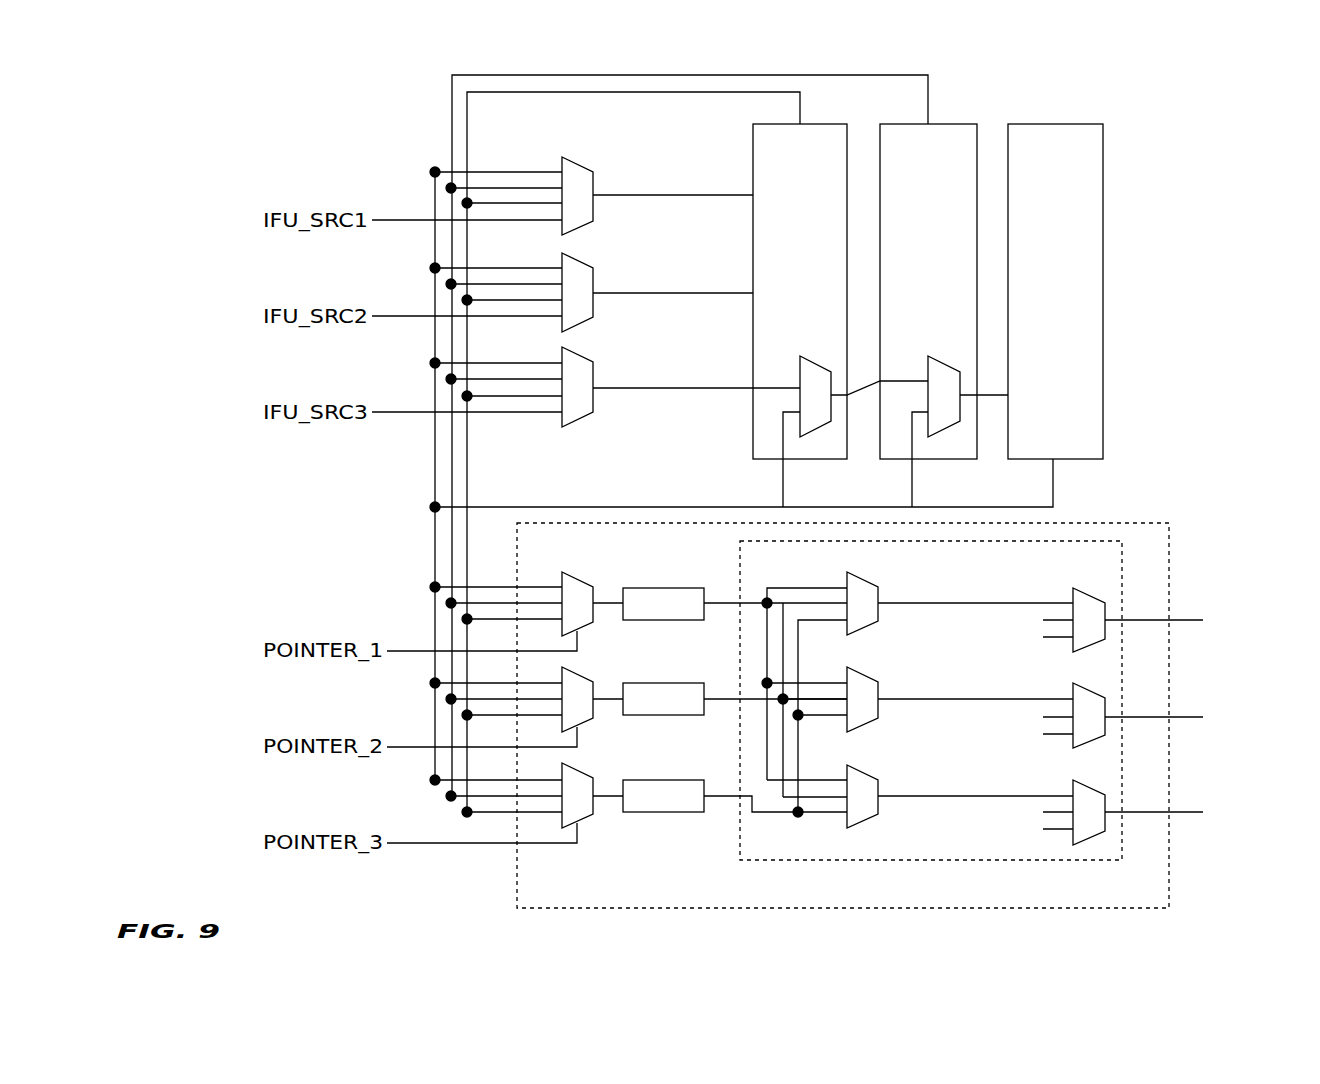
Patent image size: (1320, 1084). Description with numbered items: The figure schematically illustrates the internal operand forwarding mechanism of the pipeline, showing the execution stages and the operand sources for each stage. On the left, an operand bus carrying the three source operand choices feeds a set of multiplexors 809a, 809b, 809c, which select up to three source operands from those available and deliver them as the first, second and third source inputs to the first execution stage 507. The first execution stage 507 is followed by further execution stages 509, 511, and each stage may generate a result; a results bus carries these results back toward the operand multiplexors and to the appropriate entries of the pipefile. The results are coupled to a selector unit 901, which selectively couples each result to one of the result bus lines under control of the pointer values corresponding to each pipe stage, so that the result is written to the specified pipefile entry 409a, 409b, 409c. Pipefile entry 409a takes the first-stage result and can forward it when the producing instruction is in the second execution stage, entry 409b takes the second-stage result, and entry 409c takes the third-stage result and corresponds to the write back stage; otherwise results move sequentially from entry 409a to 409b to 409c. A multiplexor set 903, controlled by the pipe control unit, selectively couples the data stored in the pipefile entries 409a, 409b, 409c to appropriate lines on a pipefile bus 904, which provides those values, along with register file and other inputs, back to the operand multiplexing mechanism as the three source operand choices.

The multiplexor 809a is at (579, 173).
The multiplexor 809b is at (579, 270).
The multiplexor 809c is at (583, 373).
The first execution stage 507 is at (810, 174).
The execution stage 509 is at (949, 174).
The execution stage 511 is at (1072, 174).
The pipefile entry 409a is at (688, 614).
The pipefile entry 409b is at (688, 710).
The pipefile entry 409c is at (688, 807).
The selector unit 901 is at (1073, 903).
The multiplexor set 903 is at (803, 843).
The pipefile bus 904 is at (1045, 566).